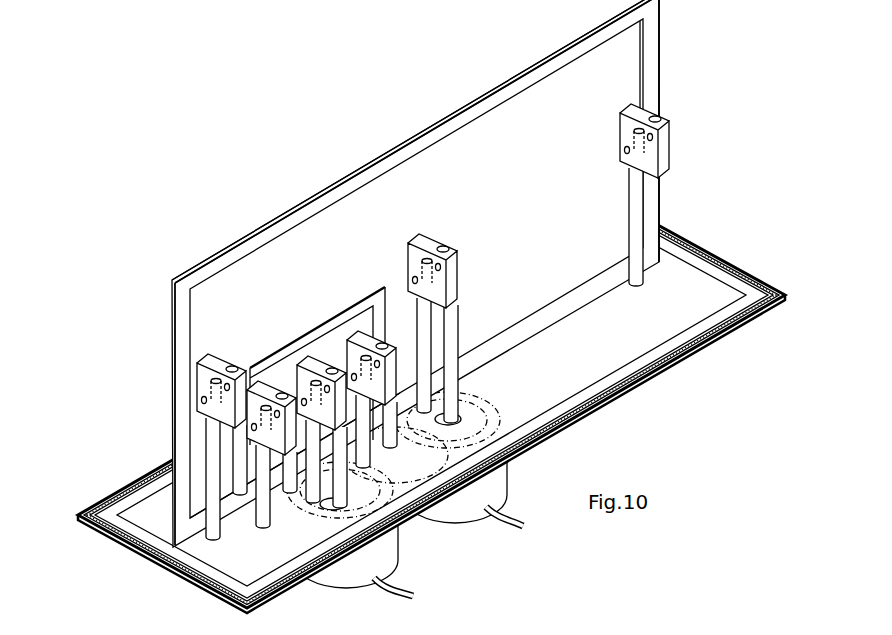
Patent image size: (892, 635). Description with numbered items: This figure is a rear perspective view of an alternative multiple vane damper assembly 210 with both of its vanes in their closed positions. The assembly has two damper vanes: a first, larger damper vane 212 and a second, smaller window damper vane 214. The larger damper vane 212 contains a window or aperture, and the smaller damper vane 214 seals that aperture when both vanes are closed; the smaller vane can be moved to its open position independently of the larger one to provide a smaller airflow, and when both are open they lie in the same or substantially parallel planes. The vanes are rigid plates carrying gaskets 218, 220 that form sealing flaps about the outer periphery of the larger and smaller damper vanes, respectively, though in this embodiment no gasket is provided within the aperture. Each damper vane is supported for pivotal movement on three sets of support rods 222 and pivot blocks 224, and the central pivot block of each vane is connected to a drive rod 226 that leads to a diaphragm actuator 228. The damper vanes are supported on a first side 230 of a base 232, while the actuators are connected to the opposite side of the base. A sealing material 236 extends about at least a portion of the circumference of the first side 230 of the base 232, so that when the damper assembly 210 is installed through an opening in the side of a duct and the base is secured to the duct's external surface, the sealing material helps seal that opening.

The multiple vane damper assembly 210 is at (198, 195).
The larger damper vane 212 is at (300, 250).
The smaller window damper vane 214 is at (358, 314).
The gasket 218 is at (407, 152).
The gasket 220 is at (264, 365).
The support rods 222 is at (420, 315).
The pivot blocks 224 is at (428, 242).
The drive rod 226 is at (340, 465).
The diaphragm actuator 228 is at (378, 567).
The first side of base 230 is at (600, 357).
The base 232 is at (700, 347).
The sealing material 236 is at (713, 263).